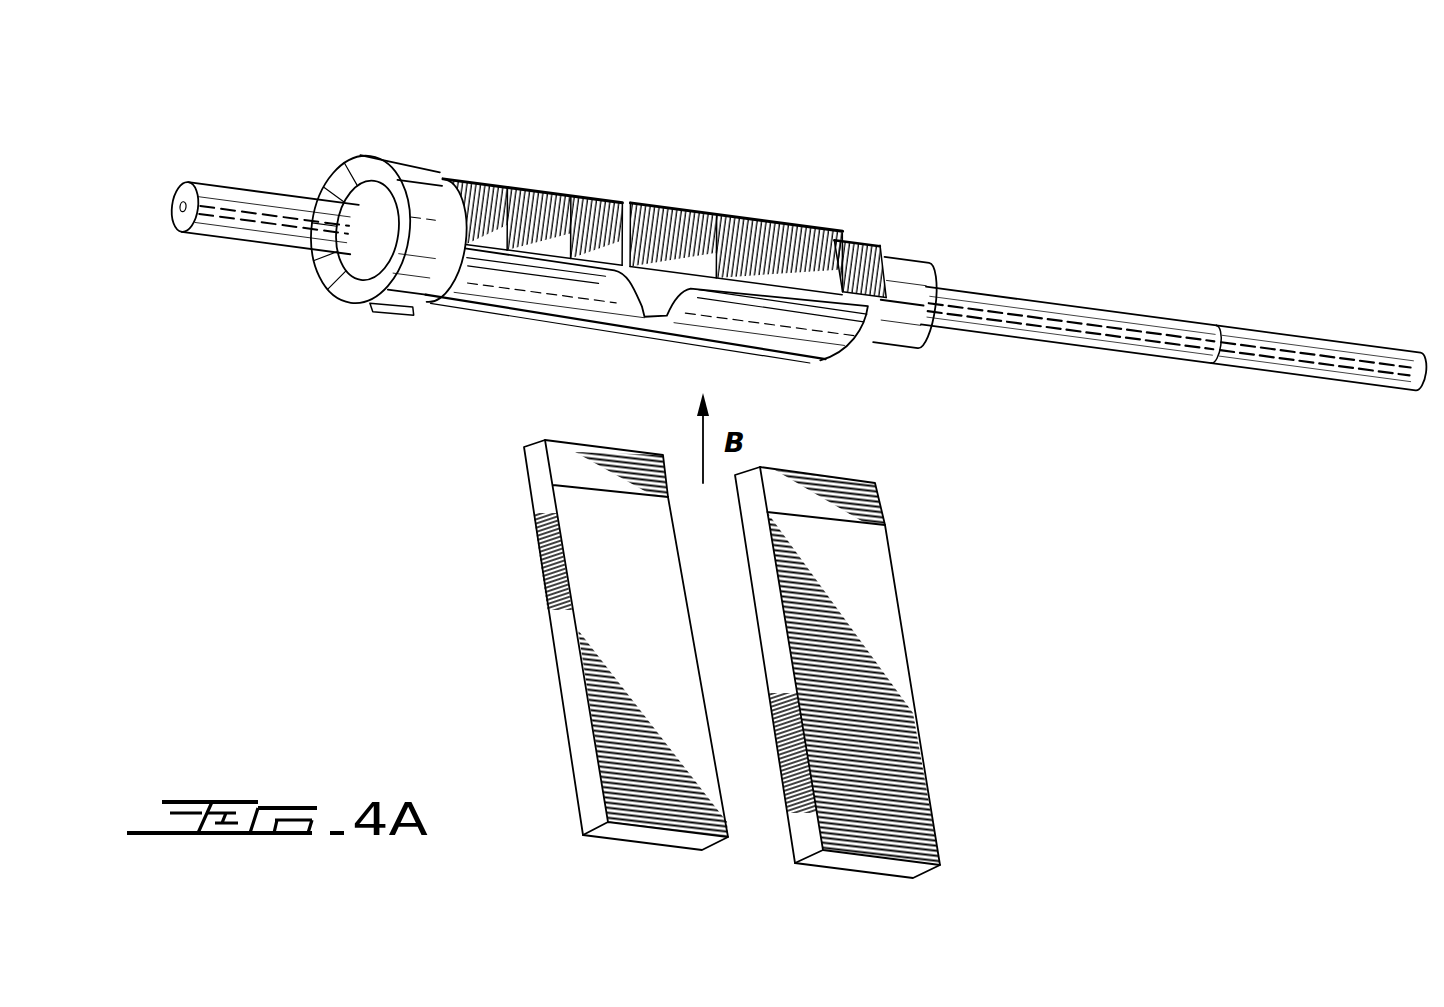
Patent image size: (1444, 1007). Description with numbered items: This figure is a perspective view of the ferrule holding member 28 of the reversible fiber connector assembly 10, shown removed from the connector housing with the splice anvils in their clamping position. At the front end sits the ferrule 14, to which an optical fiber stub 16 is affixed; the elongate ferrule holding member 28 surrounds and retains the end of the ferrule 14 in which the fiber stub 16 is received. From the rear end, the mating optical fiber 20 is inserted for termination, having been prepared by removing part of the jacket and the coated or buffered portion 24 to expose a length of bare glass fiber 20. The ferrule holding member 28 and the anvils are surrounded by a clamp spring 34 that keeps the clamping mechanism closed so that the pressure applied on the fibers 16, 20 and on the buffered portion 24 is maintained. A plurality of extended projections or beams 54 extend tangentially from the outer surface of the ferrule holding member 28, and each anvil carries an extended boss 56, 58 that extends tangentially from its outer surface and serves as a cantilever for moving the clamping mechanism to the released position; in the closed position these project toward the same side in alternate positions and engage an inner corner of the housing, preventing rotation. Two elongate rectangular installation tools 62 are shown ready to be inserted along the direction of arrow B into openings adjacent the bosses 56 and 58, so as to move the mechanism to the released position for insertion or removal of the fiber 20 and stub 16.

The reversible fiber connector assembly 10 is at (1296, 86).
The ferrule 14 is at (233, 235).
The optical fiber stub 16 is at (293, 186).
The optical fiber 20 is at (1304, 357).
The buffered portion 24 is at (1123, 323).
The ferrule holding member 28 is at (436, 208).
The clamp spring 34 is at (707, 327).
The extended projections or beams 54 is at (498, 205).
The extended boss 56 is at (588, 230).
The extended boss 58 is at (792, 258).
The installation tools 62 is at (640, 652).